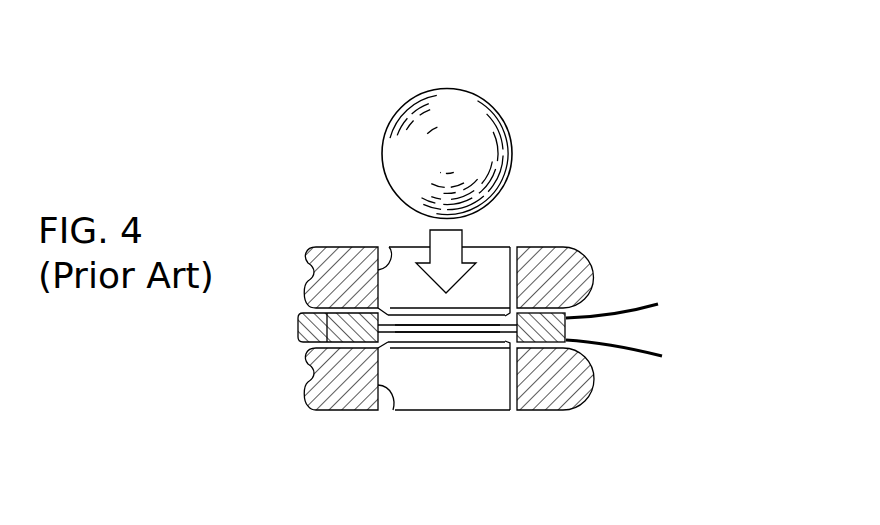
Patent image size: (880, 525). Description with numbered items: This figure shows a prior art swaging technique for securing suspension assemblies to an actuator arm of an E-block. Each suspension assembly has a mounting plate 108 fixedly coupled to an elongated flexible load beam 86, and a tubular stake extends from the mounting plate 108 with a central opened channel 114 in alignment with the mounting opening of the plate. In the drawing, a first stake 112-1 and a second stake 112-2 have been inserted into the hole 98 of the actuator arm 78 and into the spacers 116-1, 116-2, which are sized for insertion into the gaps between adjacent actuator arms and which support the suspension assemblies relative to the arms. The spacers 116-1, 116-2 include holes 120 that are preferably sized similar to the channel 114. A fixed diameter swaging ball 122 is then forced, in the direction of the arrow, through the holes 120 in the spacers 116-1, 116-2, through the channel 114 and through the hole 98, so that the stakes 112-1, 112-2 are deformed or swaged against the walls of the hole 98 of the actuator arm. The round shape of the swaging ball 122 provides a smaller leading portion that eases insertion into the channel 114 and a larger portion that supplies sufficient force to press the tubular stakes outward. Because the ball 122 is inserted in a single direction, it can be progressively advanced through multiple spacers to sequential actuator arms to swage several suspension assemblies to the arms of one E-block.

The swaging ball 122 is at (492, 103).
The spacer 116-1 is at (317, 253).
The spacer 116-2 is at (308, 380).
The holes 120 is at (389, 247).
The stake 112-1 is at (493, 316).
The stake 112-2 is at (493, 342).
The channel 114 is at (390, 316).
The mounting plate 108 is at (568, 313).
The hole 98 is at (421, 328).
The actuator arm 78 is at (570, 357).
The load beam 86 is at (662, 347).